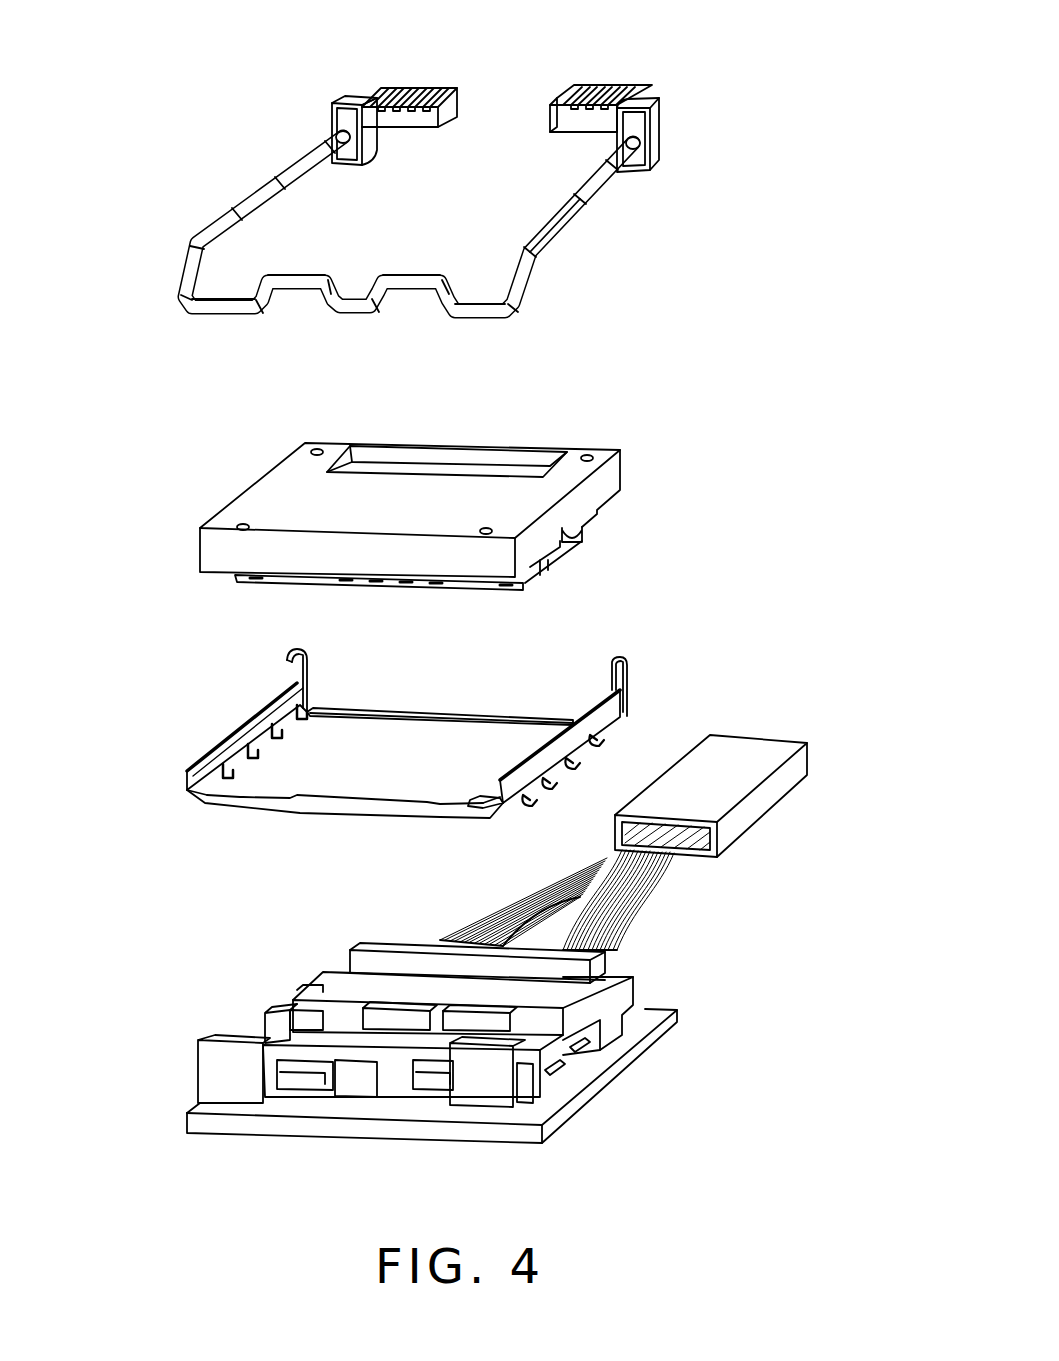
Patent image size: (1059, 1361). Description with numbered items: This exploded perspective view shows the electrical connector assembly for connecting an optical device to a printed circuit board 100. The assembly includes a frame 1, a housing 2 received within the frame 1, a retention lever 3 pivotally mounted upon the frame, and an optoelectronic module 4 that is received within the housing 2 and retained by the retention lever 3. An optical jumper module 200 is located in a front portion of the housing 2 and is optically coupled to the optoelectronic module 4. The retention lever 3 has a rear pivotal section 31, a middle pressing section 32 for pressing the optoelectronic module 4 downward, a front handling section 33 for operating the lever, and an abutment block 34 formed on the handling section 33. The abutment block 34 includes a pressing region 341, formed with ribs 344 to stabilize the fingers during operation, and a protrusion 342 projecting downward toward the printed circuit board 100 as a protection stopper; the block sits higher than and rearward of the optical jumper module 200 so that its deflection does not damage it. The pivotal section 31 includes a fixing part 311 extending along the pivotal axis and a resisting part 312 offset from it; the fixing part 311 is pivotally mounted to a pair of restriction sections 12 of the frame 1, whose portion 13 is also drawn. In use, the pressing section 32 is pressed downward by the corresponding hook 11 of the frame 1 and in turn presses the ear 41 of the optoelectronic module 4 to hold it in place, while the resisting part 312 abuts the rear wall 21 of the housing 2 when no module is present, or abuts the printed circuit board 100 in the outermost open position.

The retention lever 3 is at (688, 92).
The rear pivotal section 31 is at (520, 310).
The fixing part 311 is at (220, 318).
The resisting part 312 is at (292, 292).
The middle pressing section 32 is at (575, 218).
The front handling section 33 is at (648, 135).
The abutment block 34 is at (597, 113).
The pressing region 341 is at (392, 110).
The protrusion 342 is at (343, 123).
The ribs 344 is at (610, 117).
The optoelectronic module 4 is at (655, 460).
The ear 41 is at (583, 533).
The frame 1 is at (465, 758).
The hook 11 is at (290, 657).
The restriction section 12 is at (487, 800).
The front flange 13 is at (280, 802).
The optical jumper module 200 is at (622, 912).
The housing 2 is at (632, 998).
The rear wall 21 is at (298, 1065).
The printed circuit board 100 is at (585, 1095).